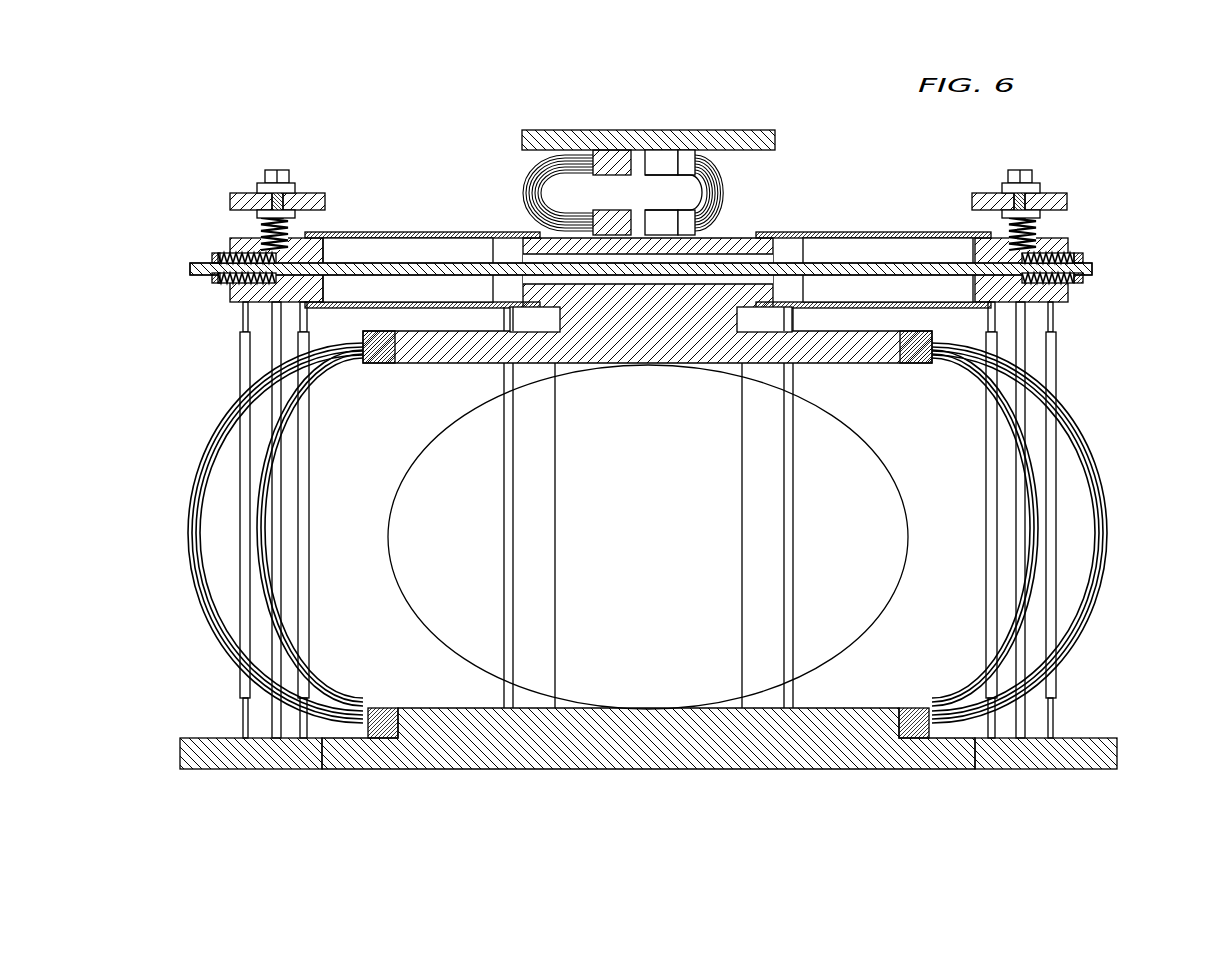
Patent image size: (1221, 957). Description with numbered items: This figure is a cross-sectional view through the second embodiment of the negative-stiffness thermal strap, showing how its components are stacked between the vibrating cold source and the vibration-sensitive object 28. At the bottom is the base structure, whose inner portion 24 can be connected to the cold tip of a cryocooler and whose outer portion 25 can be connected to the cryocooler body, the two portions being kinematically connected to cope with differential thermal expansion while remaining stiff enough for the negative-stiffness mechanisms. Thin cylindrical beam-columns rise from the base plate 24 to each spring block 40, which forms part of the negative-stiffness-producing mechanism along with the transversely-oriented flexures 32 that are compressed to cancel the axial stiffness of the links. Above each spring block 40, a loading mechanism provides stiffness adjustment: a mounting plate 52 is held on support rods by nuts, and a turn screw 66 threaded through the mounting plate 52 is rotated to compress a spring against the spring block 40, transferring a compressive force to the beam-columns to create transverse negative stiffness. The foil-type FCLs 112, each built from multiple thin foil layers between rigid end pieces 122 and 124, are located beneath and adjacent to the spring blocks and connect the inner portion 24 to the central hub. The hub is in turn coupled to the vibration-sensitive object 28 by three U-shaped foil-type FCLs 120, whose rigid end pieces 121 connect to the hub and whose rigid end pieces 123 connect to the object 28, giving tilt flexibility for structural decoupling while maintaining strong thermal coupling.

The inner portion of base structure 24 is at (605, 754).
The outer portion of base structure 25 is at (262, 760).
The vibration-sensitive object 28 is at (738, 130).
The transversely-oriented flexures 32 is at (403, 232).
The spring block 40 is at (1070, 246).
The mounting plate 52 is at (230, 201).
The turn screw 66 is at (637, 183).
The foil-type FCL 112 is at (585, 492).
The foil-type FCL of second FCL 120 is at (523, 192).
The rigid end piece 121 is at (663, 236).
The rigid end piece 122 is at (383, 364).
The rigid end piece 123 is at (607, 176).
The rigid end piece 124 is at (383, 707).